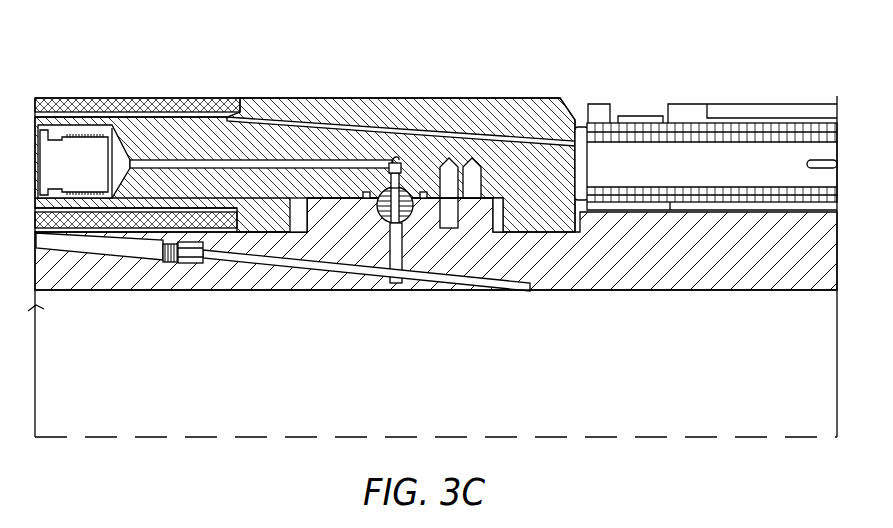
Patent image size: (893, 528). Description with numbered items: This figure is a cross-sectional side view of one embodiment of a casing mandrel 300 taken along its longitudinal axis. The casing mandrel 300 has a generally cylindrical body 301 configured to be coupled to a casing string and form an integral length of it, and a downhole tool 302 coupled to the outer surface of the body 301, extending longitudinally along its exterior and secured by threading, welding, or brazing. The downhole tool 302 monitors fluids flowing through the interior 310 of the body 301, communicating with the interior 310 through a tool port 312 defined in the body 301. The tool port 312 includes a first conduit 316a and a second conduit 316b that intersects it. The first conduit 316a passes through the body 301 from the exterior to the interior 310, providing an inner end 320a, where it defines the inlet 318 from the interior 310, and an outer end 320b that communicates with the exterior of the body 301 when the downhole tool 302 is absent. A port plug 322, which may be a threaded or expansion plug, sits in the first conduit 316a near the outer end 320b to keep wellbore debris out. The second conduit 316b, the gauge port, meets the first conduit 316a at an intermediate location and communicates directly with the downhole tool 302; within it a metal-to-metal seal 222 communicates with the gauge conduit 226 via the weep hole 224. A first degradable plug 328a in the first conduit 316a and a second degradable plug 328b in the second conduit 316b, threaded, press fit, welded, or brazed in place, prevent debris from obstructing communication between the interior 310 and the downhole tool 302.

The casing mandrel 300 is at (636, 51).
The body 301 is at (630, 272).
The downhole tool 302 is at (155, 137).
The interior 310 is at (438, 403).
The tool port 312 is at (294, 279).
The first conduit 316a is at (435, 285).
The second conduit 316b is at (383, 258).
The inlet 318 is at (525, 294).
The inner end 320a is at (534, 291).
The outer end 320b is at (207, 265).
The port plug 322 is at (173, 265).
The first degradable plug 328a is at (473, 290).
The second degradable plug 328b is at (407, 250).
The metal-to-metal seal 222 is at (413, 186).
The weep hole 224 is at (394, 156).
The gauge conduit 226 is at (312, 163).